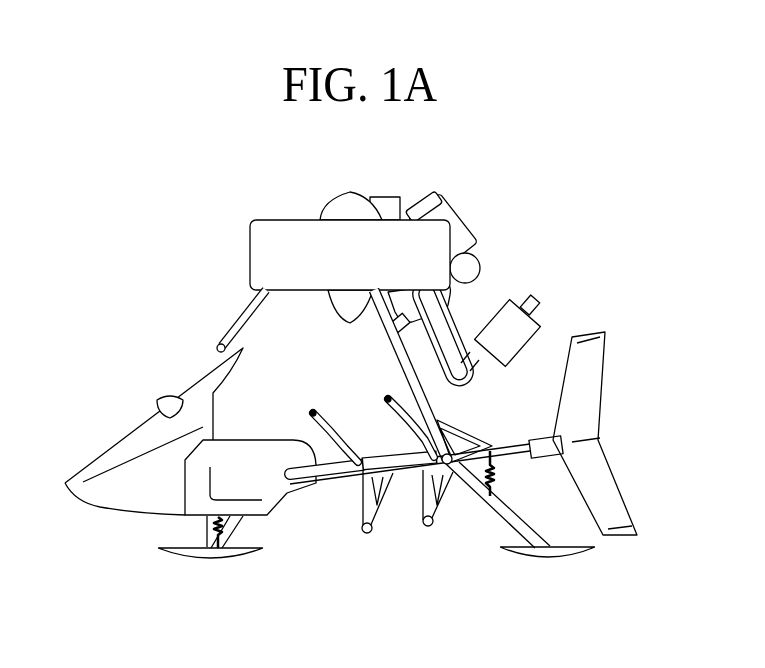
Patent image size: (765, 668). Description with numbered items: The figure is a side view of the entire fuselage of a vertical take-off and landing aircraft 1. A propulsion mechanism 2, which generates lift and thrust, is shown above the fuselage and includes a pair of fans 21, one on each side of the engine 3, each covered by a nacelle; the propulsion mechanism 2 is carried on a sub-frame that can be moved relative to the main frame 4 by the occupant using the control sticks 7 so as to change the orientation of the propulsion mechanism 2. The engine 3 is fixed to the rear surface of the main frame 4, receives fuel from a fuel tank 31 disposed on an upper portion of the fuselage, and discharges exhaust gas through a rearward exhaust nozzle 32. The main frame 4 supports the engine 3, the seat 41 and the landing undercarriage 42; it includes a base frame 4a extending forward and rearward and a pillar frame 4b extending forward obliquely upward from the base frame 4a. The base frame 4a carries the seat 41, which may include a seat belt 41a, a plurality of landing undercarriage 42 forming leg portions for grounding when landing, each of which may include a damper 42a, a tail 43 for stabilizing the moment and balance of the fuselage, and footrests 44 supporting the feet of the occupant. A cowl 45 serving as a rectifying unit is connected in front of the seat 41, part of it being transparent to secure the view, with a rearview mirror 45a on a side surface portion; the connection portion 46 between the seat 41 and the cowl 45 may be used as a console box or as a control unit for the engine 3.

The vertical take-off and landing aircraft 1 is at (150, 295).
The propulsion mechanism 2 is at (331, 237).
The engine 3 is at (467, 216).
The main frame 4 is at (375, 342).
The base frame 4a is at (502, 443).
The pillar frame 4b is at (397, 374).
The control sticks 7 is at (247, 304).
The fans 21 is at (361, 267).
The fuel tank 31 is at (390, 197).
The exhaust nozzle 32 is at (511, 300).
The seat 41 is at (340, 478).
The seat belt 41a is at (313, 412).
The landing undercarriage 42 is at (213, 562).
The damper 42a is at (214, 523).
The tail 43 is at (588, 335).
The footrests 44 is at (367, 534).
The cowl 45 is at (154, 431).
The rearview mirror 45a is at (161, 395).
The connection portion 46 is at (248, 439).